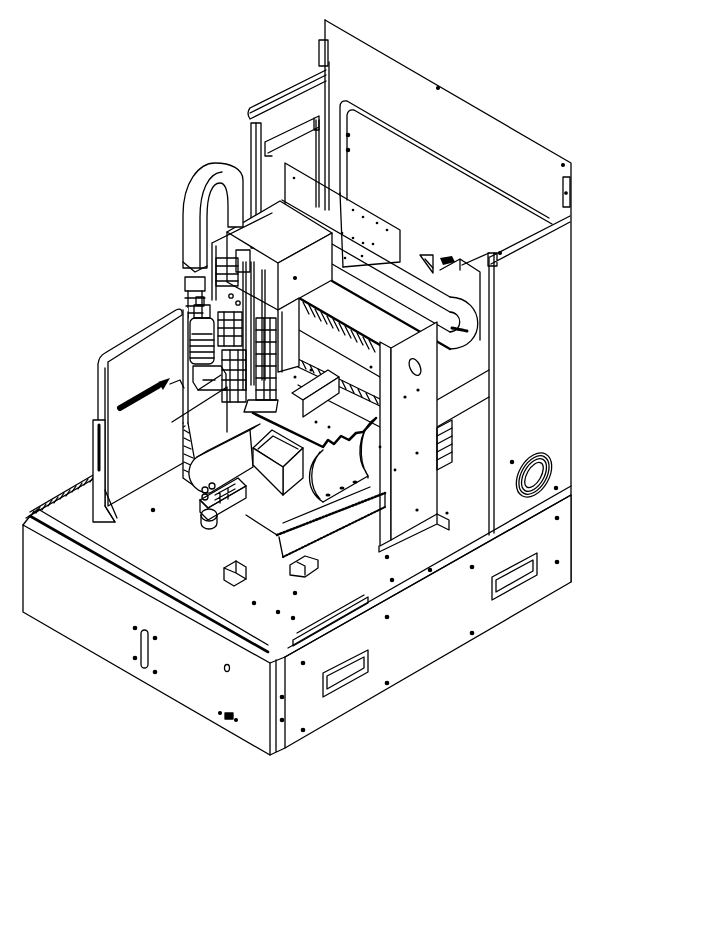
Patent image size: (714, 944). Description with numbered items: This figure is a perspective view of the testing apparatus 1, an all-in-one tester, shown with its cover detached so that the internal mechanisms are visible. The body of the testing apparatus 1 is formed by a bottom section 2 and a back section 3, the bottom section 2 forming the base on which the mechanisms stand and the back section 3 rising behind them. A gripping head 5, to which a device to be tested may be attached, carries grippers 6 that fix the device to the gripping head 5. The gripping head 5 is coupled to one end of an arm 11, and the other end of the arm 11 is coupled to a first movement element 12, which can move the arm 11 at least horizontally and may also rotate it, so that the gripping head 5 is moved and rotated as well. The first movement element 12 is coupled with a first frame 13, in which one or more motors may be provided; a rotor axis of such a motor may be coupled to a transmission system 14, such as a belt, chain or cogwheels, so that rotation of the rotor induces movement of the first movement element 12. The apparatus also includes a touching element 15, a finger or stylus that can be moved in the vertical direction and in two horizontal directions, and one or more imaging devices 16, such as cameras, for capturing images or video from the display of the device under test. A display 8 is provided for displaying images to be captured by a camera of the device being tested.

The testing apparatus 1 is at (558, 57).
The bottom section 2 is at (574, 540).
The back section 3 is at (566, 255).
The gripping head 5 is at (184, 502).
The grippers 6 is at (213, 514).
The display 8 is at (120, 345).
The arm 11 is at (246, 571).
The first movement element 12 is at (346, 506).
The first frame 13 is at (446, 463).
The transmission system 14 is at (207, 472).
The touching element 15 is at (220, 388).
The imaging devices 16 is at (186, 340).